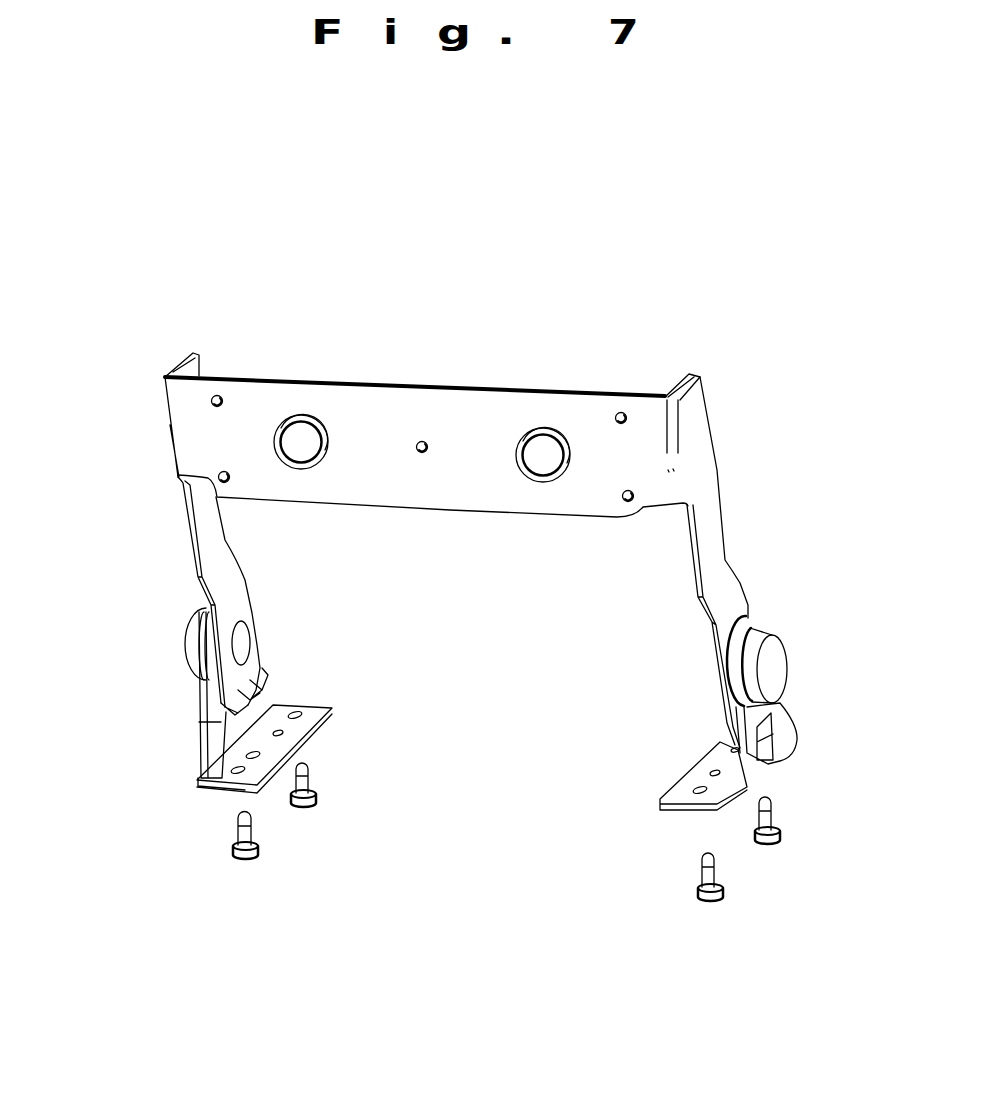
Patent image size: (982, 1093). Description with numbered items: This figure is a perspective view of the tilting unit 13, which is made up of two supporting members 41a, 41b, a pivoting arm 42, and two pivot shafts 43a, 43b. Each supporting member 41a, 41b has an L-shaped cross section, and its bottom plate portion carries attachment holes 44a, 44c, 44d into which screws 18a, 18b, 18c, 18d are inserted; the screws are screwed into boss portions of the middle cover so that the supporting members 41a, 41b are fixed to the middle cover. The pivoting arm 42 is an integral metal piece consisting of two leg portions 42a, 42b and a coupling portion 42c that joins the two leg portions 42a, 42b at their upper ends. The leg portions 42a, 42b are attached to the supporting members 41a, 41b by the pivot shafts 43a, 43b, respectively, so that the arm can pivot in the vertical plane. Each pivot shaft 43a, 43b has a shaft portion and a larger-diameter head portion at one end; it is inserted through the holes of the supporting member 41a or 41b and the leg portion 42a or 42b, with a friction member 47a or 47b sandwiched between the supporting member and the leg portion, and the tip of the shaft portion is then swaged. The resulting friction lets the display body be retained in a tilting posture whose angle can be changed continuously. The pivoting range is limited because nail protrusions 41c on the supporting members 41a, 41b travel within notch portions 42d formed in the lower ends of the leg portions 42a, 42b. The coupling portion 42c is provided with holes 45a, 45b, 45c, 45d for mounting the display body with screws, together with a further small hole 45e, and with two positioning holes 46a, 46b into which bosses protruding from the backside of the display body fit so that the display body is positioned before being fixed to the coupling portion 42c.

The tilting unit 13 is at (482, 192).
The pivoting arm 42 is at (466, 390).
The leg portion 42a is at (718, 544).
The leg portion 42b is at (208, 524).
The coupling portion 42c is at (574, 428).
The notch portion 42d is at (265, 667).
The supporting member 41a is at (797, 722).
The supporting member 41b is at (199, 737).
The nail protrusion 41c is at (267, 678).
The pivot shaft 43a is at (776, 670).
The pivot shaft 43b is at (195, 636).
The friction member 47a is at (743, 625).
The friction member 47b is at (208, 658).
The hole 44a is at (676, 807).
The hole 44c is at (232, 776).
The hole 44d is at (300, 712).
The hole 45a is at (634, 496).
The hole 45b is at (632, 419).
The hole 45c is at (211, 401).
The hole 45d is at (217, 477).
The small hole 45e is at (423, 455).
The hole 46a is at (545, 480).
The hole 46b is at (303, 472).
The screw 18a is at (710, 902).
The screw 18b is at (770, 845).
The screw 18c is at (246, 860).
The screw 18d is at (318, 798).